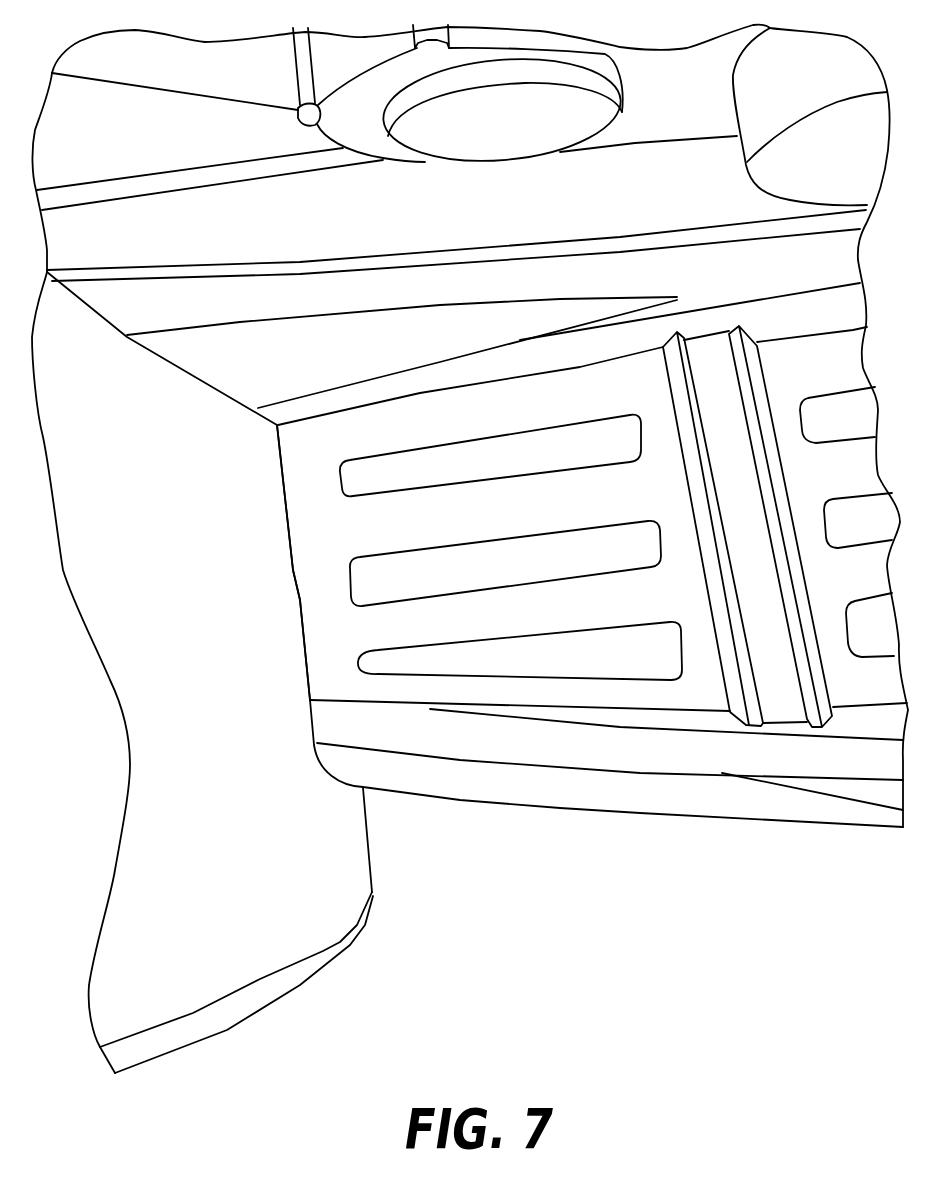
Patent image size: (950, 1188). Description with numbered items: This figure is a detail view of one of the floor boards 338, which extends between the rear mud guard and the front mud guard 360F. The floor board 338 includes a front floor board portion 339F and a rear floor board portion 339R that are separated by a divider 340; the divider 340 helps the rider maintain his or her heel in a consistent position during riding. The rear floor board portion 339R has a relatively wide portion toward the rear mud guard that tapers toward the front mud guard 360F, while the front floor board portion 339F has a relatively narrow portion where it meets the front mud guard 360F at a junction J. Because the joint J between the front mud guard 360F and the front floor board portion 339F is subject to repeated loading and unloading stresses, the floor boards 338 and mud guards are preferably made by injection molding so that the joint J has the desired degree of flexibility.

The floor board 338 is at (658, 852).
The front floor board portion 339F is at (505, 620).
The rear floor board portion 339R is at (870, 630).
The divider 340 is at (773, 690).
The front mud guard 360F is at (352, 873).
The junction J is at (292, 533).